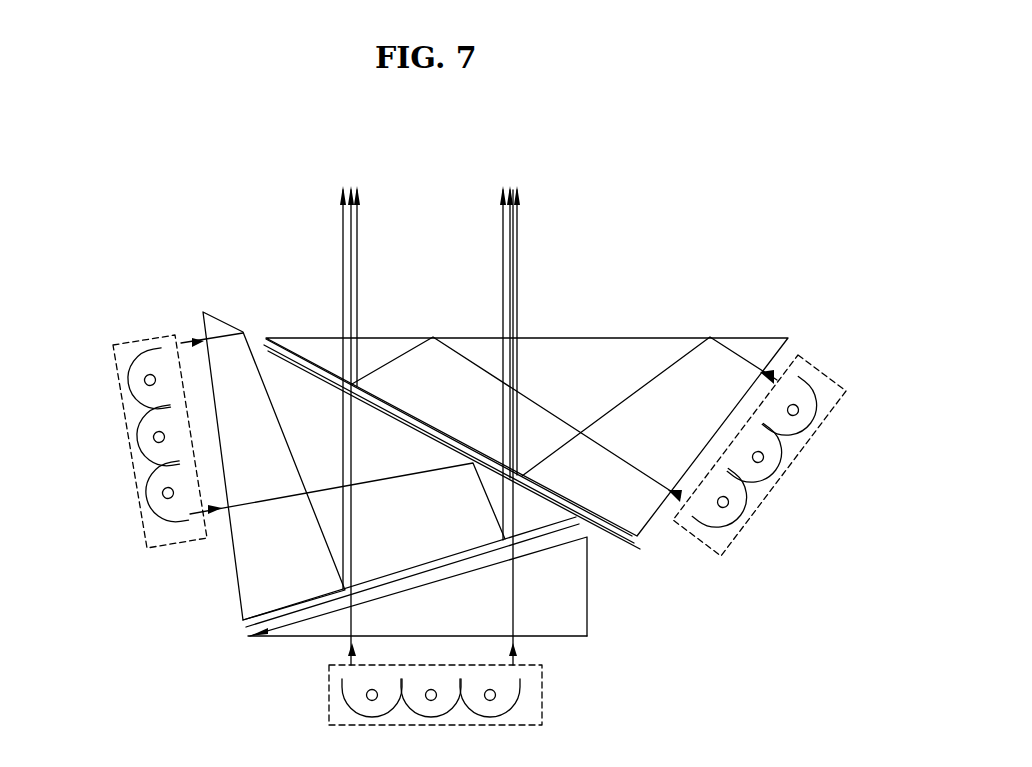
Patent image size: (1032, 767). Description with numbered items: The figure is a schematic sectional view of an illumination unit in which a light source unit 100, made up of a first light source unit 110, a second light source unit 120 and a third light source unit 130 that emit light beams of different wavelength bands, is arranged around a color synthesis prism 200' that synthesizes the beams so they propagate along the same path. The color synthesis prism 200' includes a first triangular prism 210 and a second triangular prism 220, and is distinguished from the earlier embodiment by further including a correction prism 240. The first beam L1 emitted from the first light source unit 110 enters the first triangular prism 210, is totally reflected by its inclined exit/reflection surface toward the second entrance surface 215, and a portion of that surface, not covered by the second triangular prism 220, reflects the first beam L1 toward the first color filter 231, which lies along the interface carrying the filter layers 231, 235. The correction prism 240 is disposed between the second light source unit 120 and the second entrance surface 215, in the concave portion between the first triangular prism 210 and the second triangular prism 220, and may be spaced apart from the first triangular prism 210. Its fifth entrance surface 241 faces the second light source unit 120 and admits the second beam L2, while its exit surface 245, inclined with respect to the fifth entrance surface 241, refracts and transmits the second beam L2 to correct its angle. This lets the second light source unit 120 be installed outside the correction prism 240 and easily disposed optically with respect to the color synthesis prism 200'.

The light source unit 100 is at (146, 324).
The first light source unit 110 is at (140, 520).
The second light source unit 120 is at (329, 707).
The third light source unit 130 is at (713, 545).
The color synthesis prism 200' is at (464, 445).
The first triangular prism 210 is at (221, 320).
The second entrance surface 215 is at (240, 623).
The second triangular prism 220 is at (598, 346).
The first color filter 231 is at (584, 538).
The dichroic filter layer 235 is at (633, 539).
The correction prism 240 is at (577, 598).
The fifth entrance surface 241 is at (287, 639).
The exit surface 245 is at (262, 631).
The first beam L1 is at (182, 339).
The second beam L2 is at (515, 617).